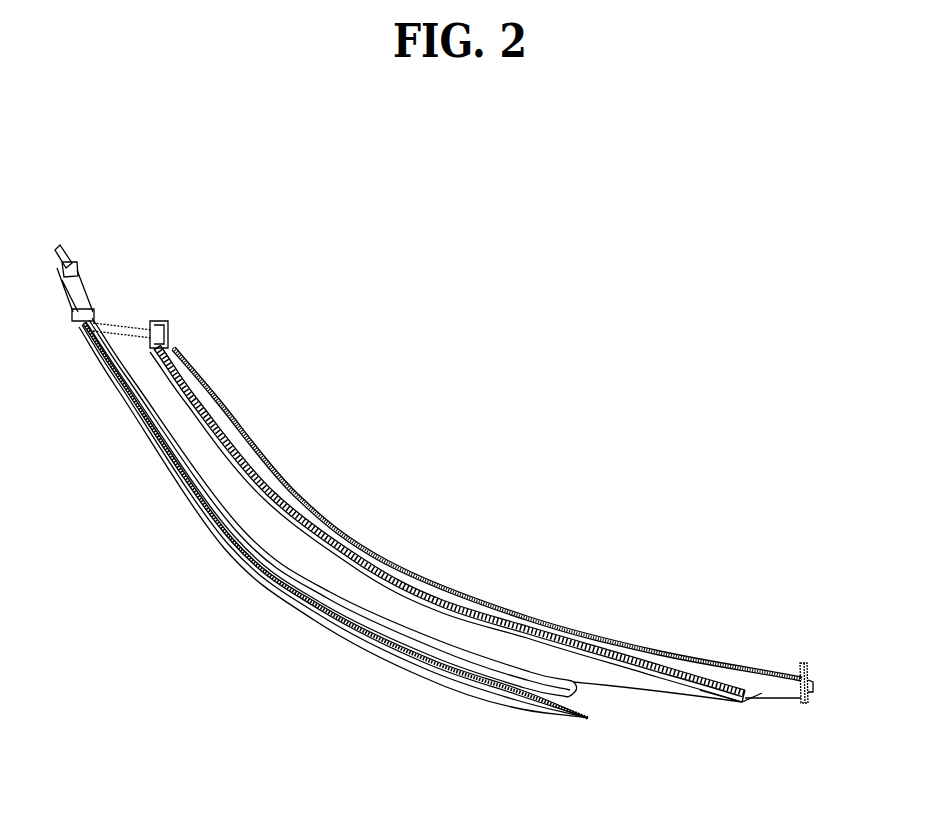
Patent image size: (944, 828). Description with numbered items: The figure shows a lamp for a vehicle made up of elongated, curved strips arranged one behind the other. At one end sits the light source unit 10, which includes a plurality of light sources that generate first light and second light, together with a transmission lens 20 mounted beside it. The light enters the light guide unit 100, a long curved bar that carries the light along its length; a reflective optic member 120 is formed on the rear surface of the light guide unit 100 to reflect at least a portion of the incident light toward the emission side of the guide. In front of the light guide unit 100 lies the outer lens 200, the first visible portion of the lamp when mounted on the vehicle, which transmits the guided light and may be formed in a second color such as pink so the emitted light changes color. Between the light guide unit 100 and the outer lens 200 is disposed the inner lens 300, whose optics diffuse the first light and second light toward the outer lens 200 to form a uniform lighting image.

The light source unit 10 is at (808, 690).
The transmission lens 20 is at (808, 662).
The light guide unit 100 is at (683, 662).
The reflective optic member 120 is at (545, 622).
The outer lens 200 is at (540, 698).
The inner lens 300 is at (422, 612).